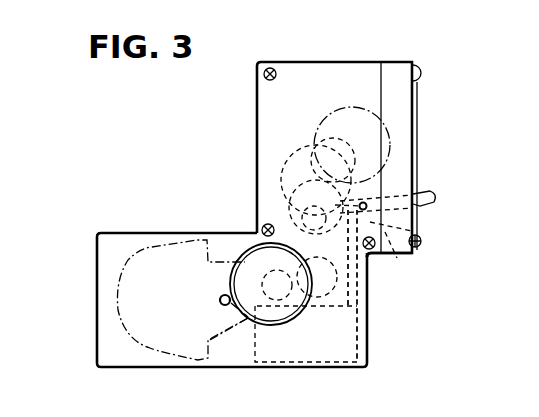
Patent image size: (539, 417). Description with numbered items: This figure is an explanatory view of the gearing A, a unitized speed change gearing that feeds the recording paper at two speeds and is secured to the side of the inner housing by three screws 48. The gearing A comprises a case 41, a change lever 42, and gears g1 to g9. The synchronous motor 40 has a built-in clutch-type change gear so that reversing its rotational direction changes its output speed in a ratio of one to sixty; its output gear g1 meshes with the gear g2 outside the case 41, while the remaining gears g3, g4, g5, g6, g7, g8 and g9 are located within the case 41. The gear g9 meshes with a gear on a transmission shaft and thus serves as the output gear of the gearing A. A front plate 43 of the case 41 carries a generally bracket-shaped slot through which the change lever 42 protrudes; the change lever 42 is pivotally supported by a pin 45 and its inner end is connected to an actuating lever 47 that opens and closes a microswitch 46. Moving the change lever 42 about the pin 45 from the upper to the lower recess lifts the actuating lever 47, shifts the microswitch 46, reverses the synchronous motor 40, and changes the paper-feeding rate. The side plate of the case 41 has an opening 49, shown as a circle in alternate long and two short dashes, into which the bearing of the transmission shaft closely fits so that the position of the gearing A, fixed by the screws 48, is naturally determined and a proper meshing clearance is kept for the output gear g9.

The gearing A is at (177, 175).
The synchronous motor 40 is at (107, 233).
The case 41 is at (257, 98).
The change lever 42 is at (434, 202).
The front plate 43 is at (416, 118).
The pin 45 is at (380, 204).
The microswitch 46 is at (249, 366).
The actuating lever 47 is at (389, 253).
The screws 48 is at (274, 68).
The opening 49 is at (348, 108).
The output gear of the synchronous motor g1 is at (219, 298).
The gear g2 is at (248, 320).
The gear g3 is at (250, 273).
The gear g4 is at (312, 298).
The gear g5 is at (345, 308).
The gear g6 is at (288, 187).
The gear g7 is at (413, 231).
The gear g8 is at (282, 158).
The output gear of the gearing g9 is at (303, 138).